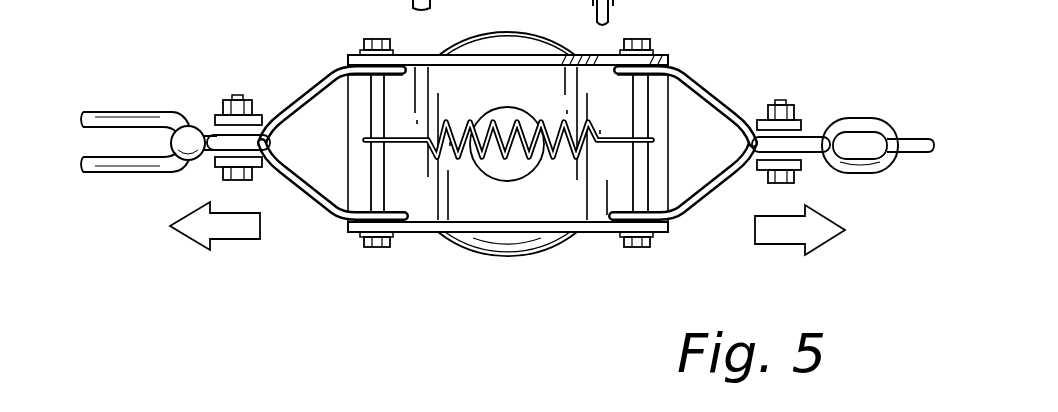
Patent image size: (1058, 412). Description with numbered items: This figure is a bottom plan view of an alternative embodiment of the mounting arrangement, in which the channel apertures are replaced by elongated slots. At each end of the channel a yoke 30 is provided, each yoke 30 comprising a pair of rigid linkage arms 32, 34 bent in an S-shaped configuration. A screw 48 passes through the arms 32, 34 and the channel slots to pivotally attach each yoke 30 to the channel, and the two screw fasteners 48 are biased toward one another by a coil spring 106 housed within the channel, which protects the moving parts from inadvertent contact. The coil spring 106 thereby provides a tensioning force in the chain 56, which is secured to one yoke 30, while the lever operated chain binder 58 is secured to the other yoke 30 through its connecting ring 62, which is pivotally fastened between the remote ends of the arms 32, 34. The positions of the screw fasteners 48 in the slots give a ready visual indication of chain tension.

The yoke 30 is at (309, 78).
The linkage arm 32 is at (314, 101).
The linkage arm 34 is at (330, 204).
The screw 48 is at (362, 46).
The chain 56 is at (866, 128).
The chain binder 58 is at (138, 118).
The connecting ring 62 is at (221, 136).
The coil spring 106 is at (472, 120).